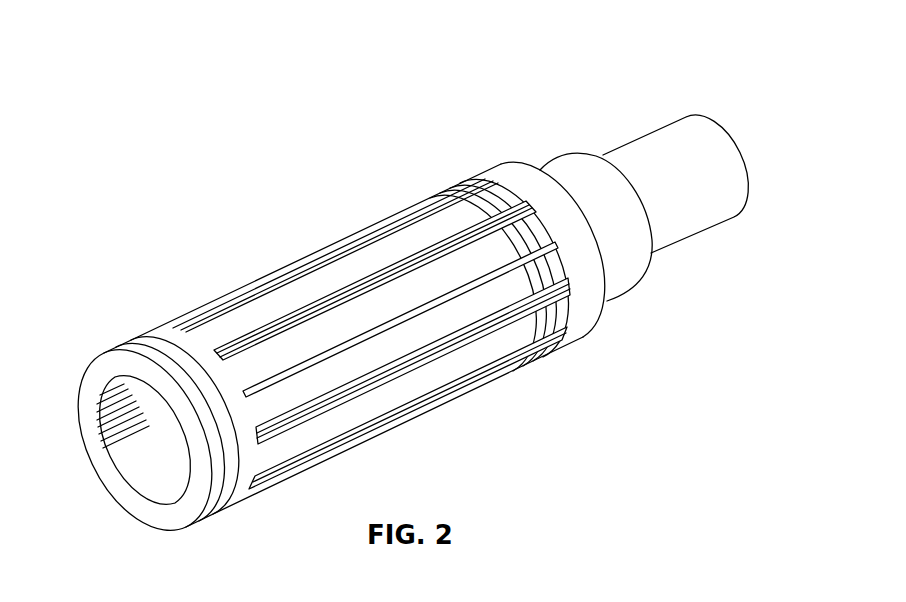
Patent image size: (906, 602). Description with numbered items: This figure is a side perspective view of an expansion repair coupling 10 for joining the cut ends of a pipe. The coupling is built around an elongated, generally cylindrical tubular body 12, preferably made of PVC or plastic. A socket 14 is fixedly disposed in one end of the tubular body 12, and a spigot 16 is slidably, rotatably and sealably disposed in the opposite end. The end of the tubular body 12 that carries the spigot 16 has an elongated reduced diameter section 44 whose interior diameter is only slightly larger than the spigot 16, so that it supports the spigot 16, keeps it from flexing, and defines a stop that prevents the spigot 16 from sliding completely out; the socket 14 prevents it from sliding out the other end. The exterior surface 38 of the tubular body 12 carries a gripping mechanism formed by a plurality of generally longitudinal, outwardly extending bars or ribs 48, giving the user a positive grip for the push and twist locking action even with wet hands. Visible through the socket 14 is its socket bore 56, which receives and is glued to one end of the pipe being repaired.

The expansion repair coupling 10 is at (389, 284).
The tubular body 12 is at (343, 338).
The socket 14 is at (95, 362).
The spigot 16 is at (651, 158).
The exterior surface 38 is at (413, 230).
The reduced diameter section 44 is at (625, 265).
The ribs 48 is at (445, 363).
The socket bore 56 is at (150, 467).